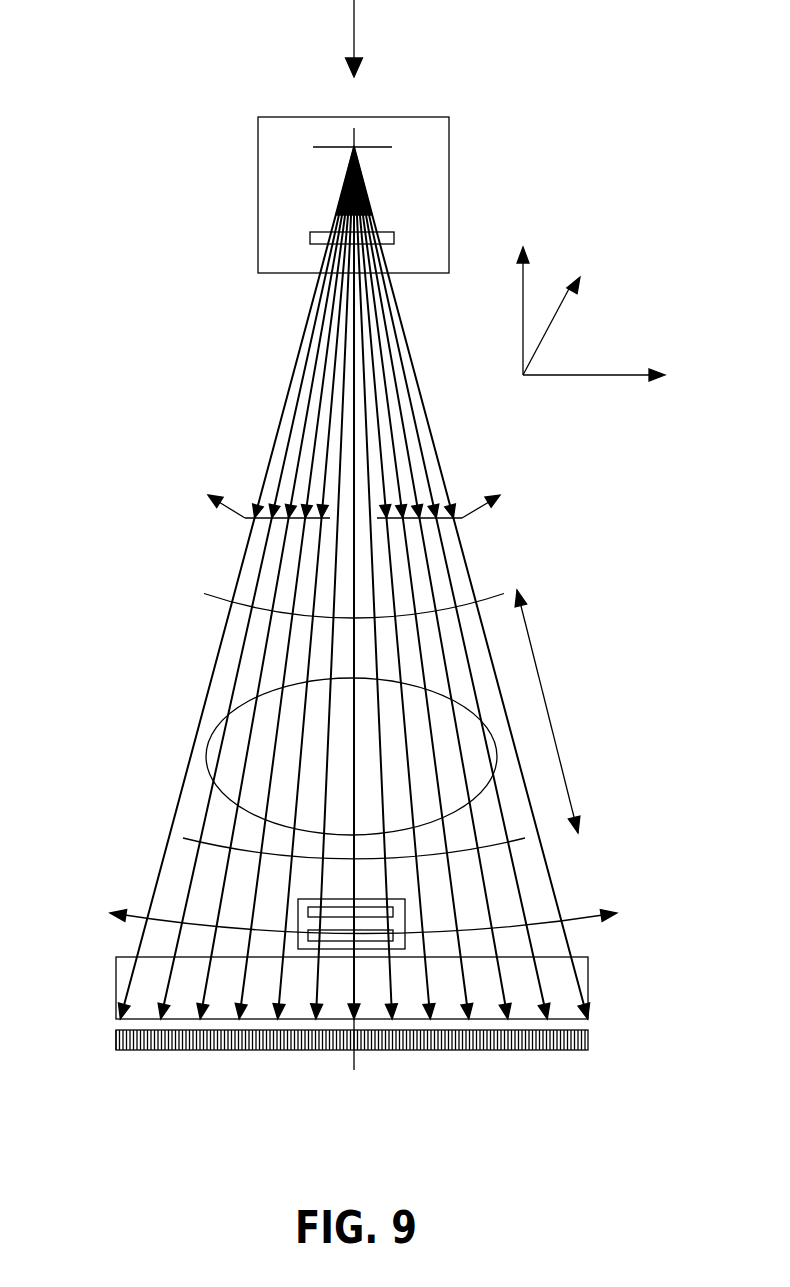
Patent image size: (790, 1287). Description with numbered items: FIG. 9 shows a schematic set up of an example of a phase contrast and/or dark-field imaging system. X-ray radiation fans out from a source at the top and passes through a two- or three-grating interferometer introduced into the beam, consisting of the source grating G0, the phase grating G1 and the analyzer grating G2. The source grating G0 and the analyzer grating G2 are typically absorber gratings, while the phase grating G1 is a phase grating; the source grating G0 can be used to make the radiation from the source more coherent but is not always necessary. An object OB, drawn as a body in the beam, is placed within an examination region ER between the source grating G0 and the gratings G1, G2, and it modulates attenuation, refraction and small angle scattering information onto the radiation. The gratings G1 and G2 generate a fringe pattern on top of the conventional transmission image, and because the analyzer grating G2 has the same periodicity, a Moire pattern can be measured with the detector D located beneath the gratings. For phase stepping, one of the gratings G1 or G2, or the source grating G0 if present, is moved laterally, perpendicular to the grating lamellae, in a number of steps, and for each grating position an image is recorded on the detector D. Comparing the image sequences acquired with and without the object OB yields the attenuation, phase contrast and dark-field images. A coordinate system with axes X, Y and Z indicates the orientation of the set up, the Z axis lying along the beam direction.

The source grating G0 is at (371, 239).
The phase grating G1 is at (432, 912).
The analyzer grating G2 is at (432, 941).
The object OB is at (232, 750).
The examination region ER is at (527, 585).
The detector D is at (510, 1040).
The x axis X is at (606, 377).
The y axis Y is at (558, 312).
The z axis Z is at (519, 296).